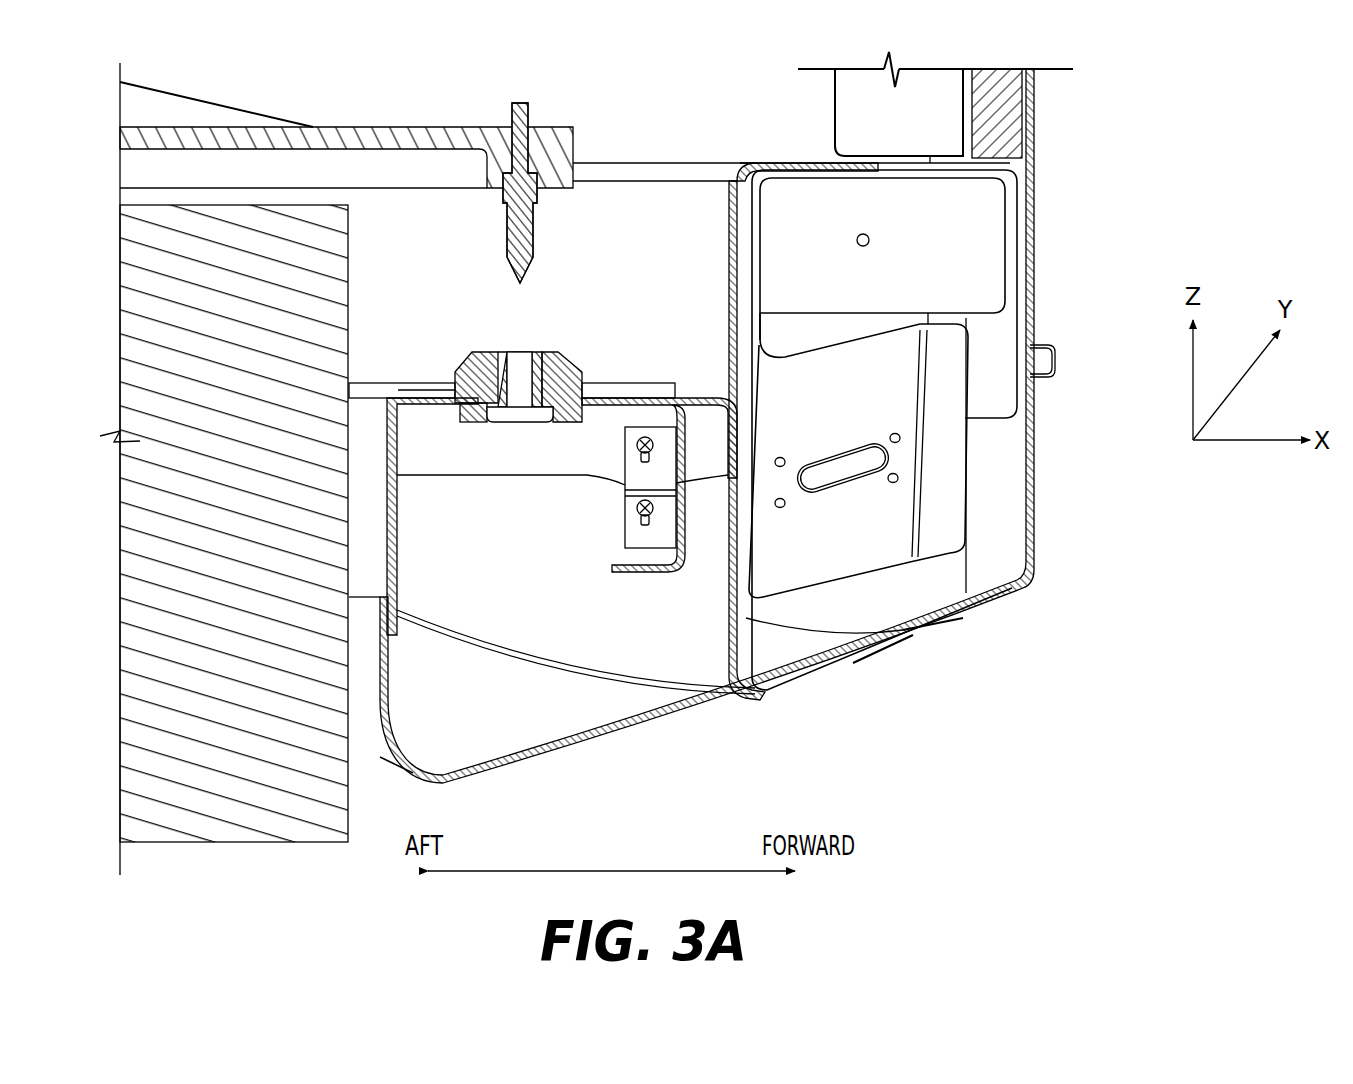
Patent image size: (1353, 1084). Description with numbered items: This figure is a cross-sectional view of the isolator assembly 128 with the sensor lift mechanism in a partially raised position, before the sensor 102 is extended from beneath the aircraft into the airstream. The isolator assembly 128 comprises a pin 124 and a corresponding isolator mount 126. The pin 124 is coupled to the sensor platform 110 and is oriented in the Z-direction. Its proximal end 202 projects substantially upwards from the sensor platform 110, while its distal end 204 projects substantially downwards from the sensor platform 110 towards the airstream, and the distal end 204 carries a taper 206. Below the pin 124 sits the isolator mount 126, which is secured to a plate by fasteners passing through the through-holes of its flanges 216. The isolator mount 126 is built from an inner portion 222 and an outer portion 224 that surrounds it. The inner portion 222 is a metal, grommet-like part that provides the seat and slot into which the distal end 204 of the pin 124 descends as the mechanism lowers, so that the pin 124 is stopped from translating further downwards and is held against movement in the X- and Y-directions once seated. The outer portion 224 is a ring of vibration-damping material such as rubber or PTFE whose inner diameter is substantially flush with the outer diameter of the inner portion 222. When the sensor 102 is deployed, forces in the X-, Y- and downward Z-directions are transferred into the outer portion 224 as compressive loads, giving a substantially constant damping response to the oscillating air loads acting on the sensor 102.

The sensor 102 is at (130, 718).
The sensor platform 110 is at (428, 140).
The pin 124 is at (592, 200).
The isolator mount 126 is at (531, 363).
The isolator assembly 128 is at (300, 280).
The proximal end 202 is at (543, 148).
The distal end 204 is at (481, 241).
The taper 206 is at (523, 279).
The flanges 216 is at (425, 403).
The inner portion 222 is at (540, 353).
The outer portion 224 is at (583, 370).